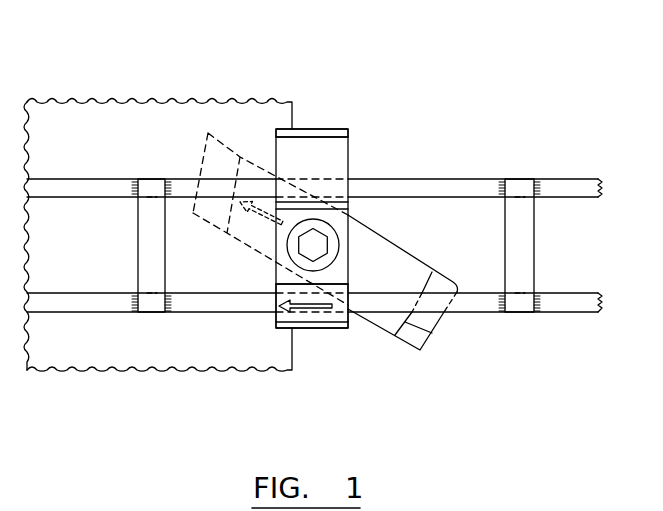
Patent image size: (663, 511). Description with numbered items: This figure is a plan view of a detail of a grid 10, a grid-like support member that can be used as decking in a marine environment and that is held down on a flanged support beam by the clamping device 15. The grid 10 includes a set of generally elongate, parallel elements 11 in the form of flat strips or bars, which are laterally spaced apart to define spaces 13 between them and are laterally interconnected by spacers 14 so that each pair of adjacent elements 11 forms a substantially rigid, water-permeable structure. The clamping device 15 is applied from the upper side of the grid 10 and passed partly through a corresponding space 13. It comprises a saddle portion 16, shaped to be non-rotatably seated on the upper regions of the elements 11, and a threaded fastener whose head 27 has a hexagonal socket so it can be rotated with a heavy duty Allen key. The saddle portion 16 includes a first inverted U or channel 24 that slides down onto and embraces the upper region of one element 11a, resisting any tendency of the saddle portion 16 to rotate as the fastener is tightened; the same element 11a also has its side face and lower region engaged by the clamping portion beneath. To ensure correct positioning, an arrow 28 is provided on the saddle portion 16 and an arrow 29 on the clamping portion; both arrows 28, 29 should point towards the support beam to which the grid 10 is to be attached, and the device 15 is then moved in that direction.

The grid 10 is at (330, 232).
The elongate elements 11 is at (558, 187).
The element 11a is at (572, 307).
The spaces 13 is at (468, 240).
The spacers 14 is at (152, 225).
The clamping device 15 is at (376, 232).
The saddle portion 16 is at (312, 146).
The first inverted U or channel 24 is at (303, 328).
The head 27 is at (332, 243).
The arrow 28 is at (313, 306).
The arrow 29 is at (255, 205).